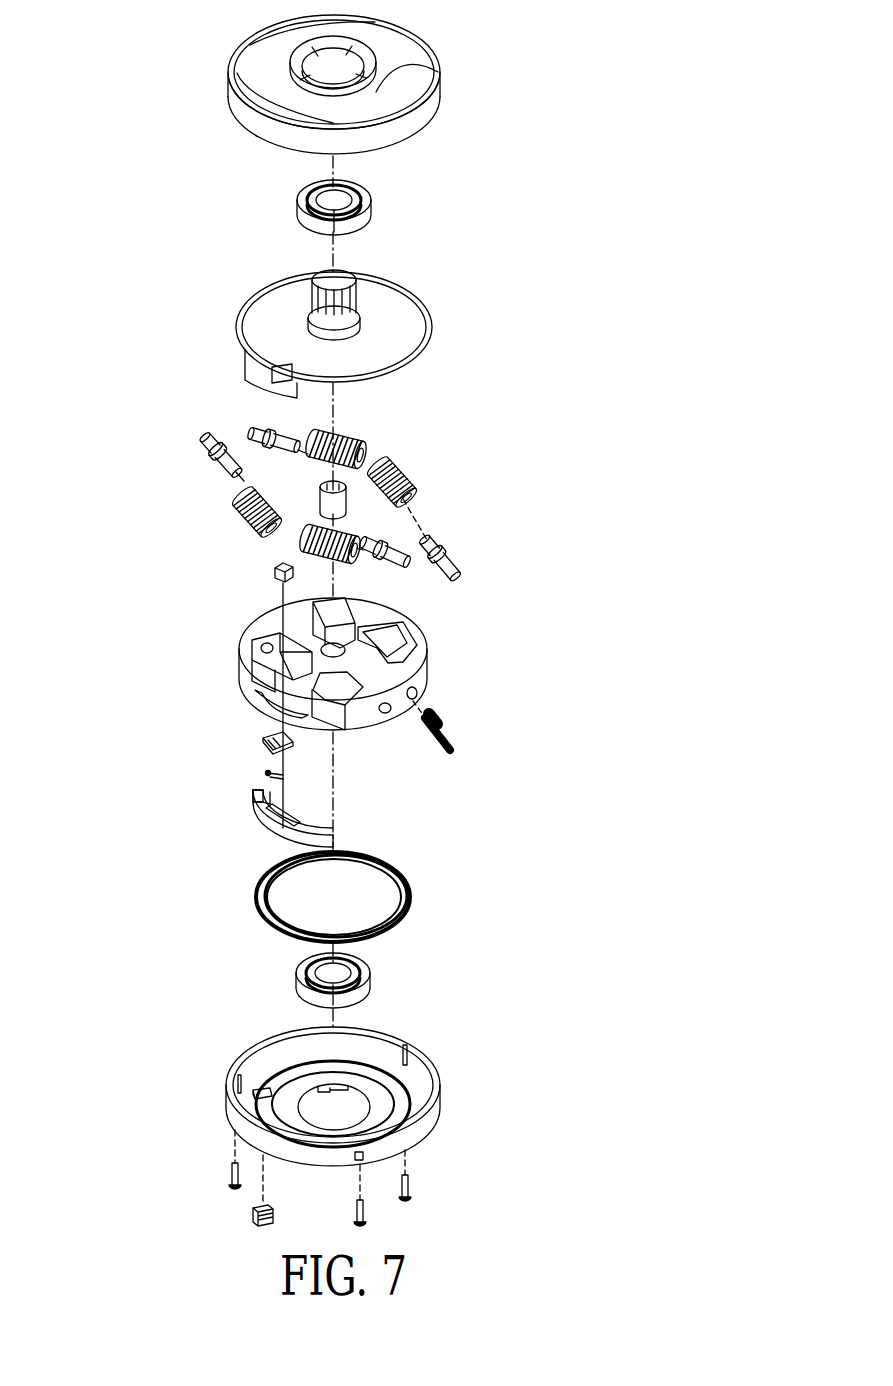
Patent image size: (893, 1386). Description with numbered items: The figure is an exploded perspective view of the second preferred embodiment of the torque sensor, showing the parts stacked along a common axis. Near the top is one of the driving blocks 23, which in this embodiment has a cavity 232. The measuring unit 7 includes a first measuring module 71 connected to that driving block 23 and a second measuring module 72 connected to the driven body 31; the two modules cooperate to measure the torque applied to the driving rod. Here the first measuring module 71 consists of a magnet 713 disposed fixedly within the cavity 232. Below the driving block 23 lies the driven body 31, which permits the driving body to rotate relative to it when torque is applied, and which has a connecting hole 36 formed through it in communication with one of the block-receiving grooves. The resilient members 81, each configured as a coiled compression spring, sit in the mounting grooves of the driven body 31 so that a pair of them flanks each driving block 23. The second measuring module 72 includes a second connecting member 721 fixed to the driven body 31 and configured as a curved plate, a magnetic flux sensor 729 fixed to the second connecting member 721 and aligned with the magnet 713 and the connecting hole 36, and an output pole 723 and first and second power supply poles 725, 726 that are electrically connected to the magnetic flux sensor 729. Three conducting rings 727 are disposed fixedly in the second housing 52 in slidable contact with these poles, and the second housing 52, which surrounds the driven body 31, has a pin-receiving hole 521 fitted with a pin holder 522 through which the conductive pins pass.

The measuring unit 7 is at (343, 830).
The driving block 23 is at (274, 342).
The cavity 232 is at (265, 392).
The driven body 31 is at (282, 664).
The connecting hole 36 is at (258, 700).
The second housing 52 is at (330, 1096).
The pin-receiving hole 521 is at (252, 1095).
The pin holder 522 is at (253, 1213).
The first measuring module 71 is at (225, 693).
The magnet 713 is at (283, 580).
The second measuring module 72 is at (241, 808).
The second connecting member 721 is at (260, 814).
The output pole 723 is at (266, 777).
The first power supply pole 725 is at (276, 776).
The second power supply pole 726 is at (265, 773).
The conducting ring 727 is at (410, 880).
The magnetic flux sensor 729 is at (263, 741).
The resilient member 81 is at (350, 440).